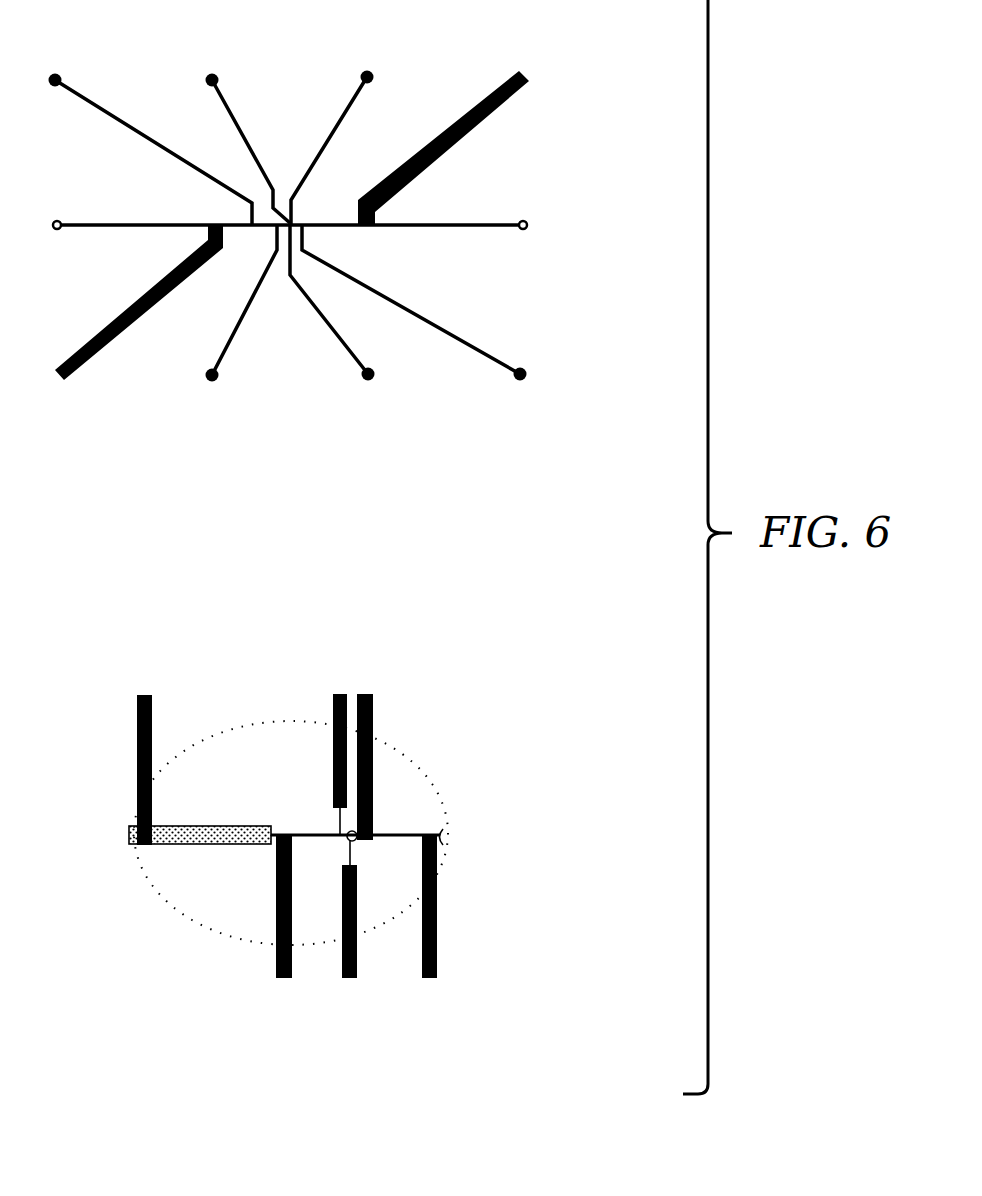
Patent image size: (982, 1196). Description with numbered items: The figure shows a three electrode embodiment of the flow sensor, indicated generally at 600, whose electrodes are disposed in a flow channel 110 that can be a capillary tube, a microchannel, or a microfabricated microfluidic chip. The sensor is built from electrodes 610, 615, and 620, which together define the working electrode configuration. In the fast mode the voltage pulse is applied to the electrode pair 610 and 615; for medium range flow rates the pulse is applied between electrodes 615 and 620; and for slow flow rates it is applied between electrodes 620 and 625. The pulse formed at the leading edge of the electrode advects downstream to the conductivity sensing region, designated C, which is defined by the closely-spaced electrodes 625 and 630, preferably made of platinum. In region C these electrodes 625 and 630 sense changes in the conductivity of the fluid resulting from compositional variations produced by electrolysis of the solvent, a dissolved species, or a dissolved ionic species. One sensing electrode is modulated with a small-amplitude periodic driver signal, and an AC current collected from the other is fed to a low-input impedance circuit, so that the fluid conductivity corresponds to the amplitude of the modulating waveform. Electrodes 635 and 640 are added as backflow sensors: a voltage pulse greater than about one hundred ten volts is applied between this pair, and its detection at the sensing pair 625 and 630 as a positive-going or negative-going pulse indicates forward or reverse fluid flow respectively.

The three electrode flow sensor 600 is at (257, 665).
The flow channel 110 is at (98, 228).
The electrode 610 is at (93, 100).
The electrode 615 is at (248, 313).
The electrode 620 is at (237, 122).
The electrode 625 is at (345, 112).
The electrode 630 is at (327, 325).
The electrode 635 is at (482, 120).
The electrode 640 is at (117, 333).
The conductivity sensing region C is at (355, 843).